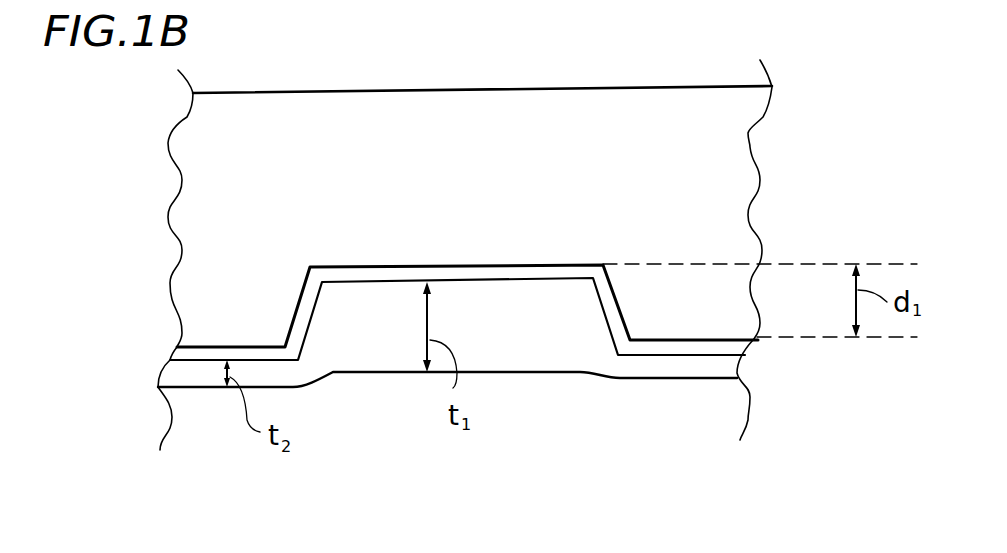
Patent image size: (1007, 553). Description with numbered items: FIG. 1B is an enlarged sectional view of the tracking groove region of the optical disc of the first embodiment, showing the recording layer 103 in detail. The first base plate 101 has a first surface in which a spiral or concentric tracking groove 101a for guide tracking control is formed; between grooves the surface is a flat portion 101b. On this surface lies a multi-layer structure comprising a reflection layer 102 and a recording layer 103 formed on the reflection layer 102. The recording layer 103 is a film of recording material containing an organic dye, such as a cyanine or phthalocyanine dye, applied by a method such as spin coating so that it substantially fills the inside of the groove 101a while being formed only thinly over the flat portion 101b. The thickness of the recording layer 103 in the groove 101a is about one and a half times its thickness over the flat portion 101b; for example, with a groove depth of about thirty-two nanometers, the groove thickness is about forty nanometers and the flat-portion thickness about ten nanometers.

The first base plate 101 is at (562, 100).
The tracking groove 101a is at (518, 266).
The flat portion 101b is at (683, 340).
The reflection layer 102 is at (740, 346).
The recording layer 103 is at (703, 380).